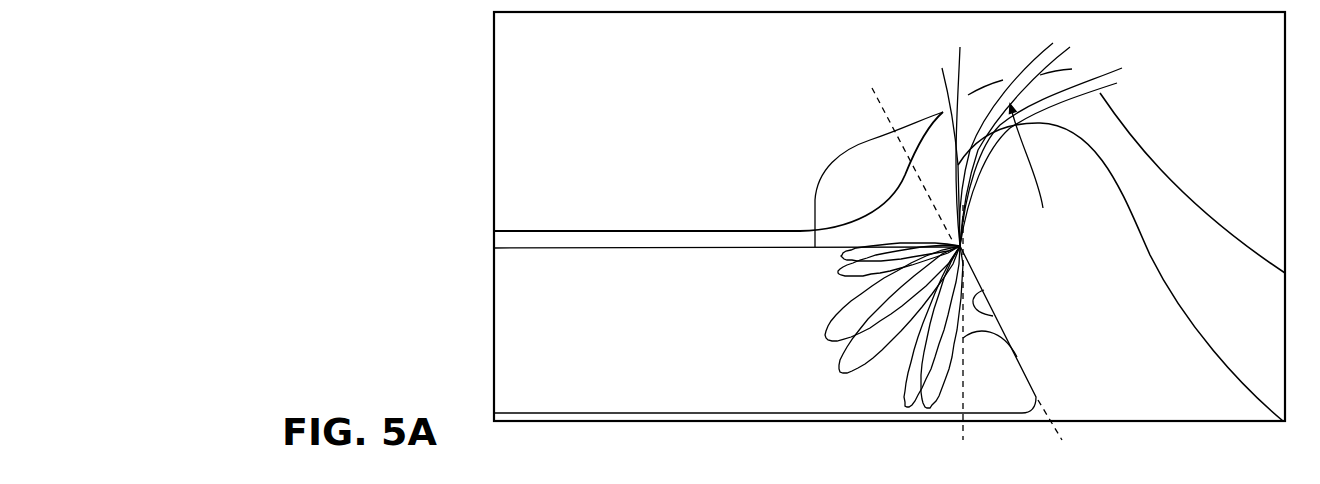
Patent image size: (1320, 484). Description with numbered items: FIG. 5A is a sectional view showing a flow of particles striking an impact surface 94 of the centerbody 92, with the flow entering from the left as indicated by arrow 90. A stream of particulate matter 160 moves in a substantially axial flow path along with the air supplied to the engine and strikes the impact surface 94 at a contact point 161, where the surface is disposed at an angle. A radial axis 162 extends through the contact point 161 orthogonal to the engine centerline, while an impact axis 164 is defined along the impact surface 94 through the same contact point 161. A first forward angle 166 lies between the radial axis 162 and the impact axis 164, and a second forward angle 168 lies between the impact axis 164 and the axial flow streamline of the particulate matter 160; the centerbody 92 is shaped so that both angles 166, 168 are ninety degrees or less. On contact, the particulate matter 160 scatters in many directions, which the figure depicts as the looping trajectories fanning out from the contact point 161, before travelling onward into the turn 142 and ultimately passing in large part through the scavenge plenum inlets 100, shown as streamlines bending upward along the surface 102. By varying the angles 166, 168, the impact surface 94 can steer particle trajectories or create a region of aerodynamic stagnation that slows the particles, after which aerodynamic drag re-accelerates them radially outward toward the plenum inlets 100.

The flow direction 90 is at (555, 335).
The centerbody 92 is at (1098, 290).
The impact surface 94 is at (993, 315).
The plenum inlets 100 is at (968, 83).
The airfoil surface 102 is at (1198, 195).
The turn 142 is at (1041, 169).
The particulate matter 160 is at (628, 249).
The contact point 161 is at (963, 247).
The radial axis 162 is at (960, 430).
The impact axis 164 is at (882, 112).
The first forward angle 166 is at (1017, 357).
The second forward angle 168 is at (814, 206).